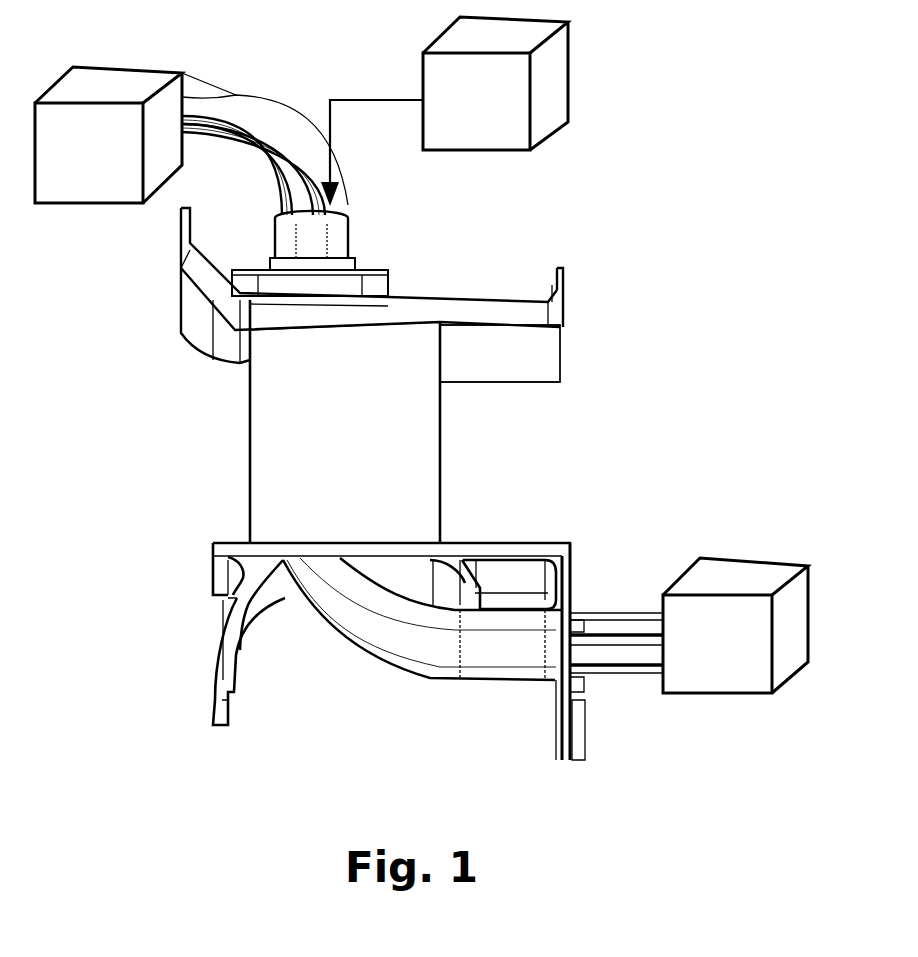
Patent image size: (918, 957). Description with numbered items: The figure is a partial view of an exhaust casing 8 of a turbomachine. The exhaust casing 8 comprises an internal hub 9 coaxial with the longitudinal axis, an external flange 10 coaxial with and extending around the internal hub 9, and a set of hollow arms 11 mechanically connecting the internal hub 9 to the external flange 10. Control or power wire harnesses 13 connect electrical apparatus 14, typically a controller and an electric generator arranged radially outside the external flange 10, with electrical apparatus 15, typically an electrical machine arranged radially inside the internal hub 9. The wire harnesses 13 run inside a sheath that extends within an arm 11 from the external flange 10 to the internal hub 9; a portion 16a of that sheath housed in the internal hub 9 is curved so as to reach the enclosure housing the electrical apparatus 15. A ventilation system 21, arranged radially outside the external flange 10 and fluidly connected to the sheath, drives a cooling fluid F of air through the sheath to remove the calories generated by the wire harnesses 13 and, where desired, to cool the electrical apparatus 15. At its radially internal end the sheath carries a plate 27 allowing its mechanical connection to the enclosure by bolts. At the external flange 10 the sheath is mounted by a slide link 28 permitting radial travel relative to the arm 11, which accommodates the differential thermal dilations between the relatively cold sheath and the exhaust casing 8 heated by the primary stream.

The exhaust casing 8 is at (668, 240).
The internal hub 9 is at (463, 540).
The external flange 10 is at (488, 315).
The arm 11 is at (290, 472).
The wire harness 13 is at (276, 138).
The electrical apparatus 14 is at (103, 164).
The electrical apparatus 15 is at (730, 660).
The portion of the sheath 16a is at (425, 645).
The ventilation system 21 is at (491, 112).
The plate 27 is at (572, 585).
The slide link 28 is at (325, 268).
The cooling fluid F is at (367, 98).